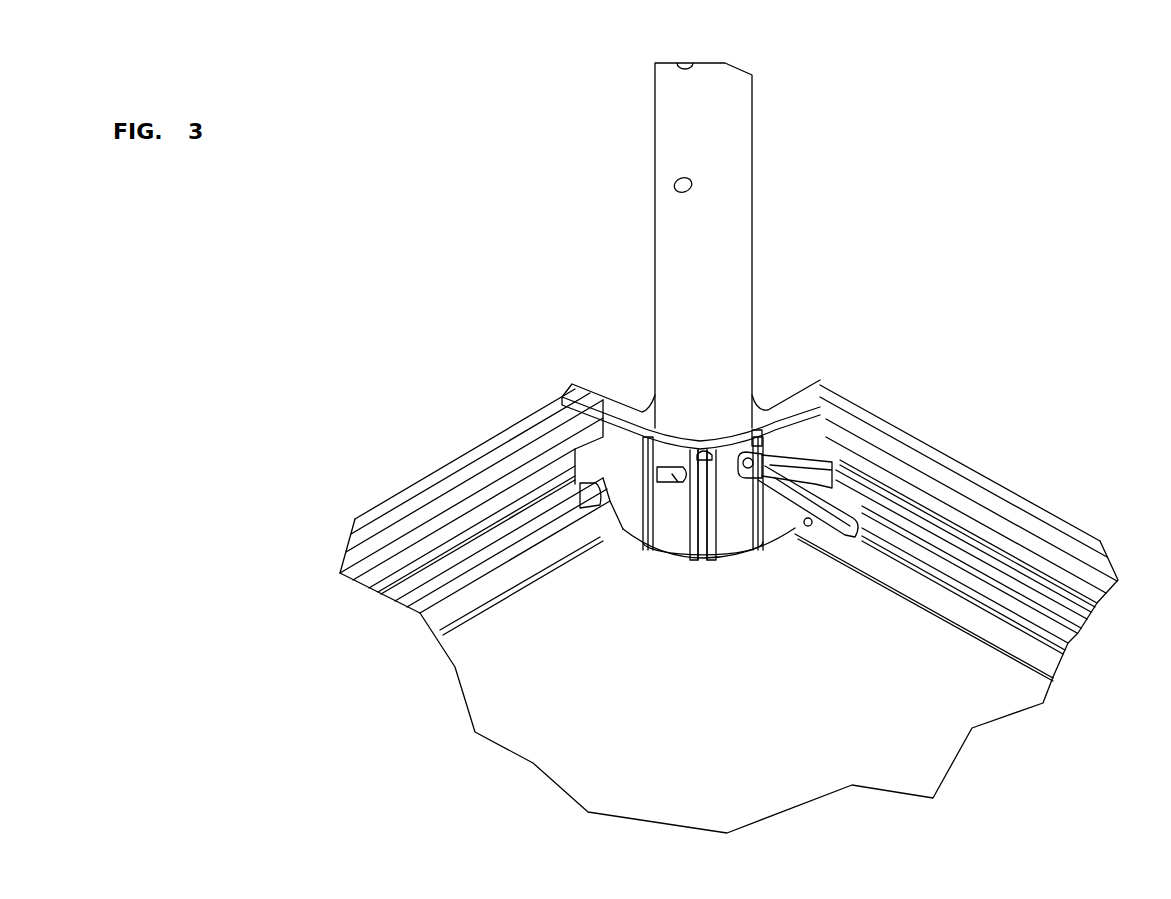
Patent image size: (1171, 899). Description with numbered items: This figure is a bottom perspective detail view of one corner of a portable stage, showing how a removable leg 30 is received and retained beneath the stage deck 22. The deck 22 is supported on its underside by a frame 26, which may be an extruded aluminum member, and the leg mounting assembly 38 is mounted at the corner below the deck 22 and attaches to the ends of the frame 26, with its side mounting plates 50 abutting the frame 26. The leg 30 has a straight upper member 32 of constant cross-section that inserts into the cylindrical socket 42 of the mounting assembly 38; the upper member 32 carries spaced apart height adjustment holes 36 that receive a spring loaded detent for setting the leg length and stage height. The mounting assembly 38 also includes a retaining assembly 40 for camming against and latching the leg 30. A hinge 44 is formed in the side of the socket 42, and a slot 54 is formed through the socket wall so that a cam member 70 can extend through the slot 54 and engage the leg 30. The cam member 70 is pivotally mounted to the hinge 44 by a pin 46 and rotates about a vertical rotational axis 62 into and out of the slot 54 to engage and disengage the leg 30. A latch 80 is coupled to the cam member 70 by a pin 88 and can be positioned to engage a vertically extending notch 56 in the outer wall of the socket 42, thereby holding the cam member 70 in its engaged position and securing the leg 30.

The stage deck 22 is at (720, 722).
The frame 26 is at (475, 462).
The leg 30 is at (673, 245).
The upper member 32 is at (733, 222).
The height adjustment hole 36 is at (690, 183).
The leg mounting assembly 38 is at (773, 441).
The retaining assembly 40 is at (861, 468).
The socket 42 is at (757, 393).
The hinge 44 is at (718, 545).
The pin 46 is at (710, 470).
The side mounting plate 50 is at (600, 398).
The slot 54 is at (673, 481).
The notch 56 is at (762, 440).
The vertical rotational axis 62 is at (703, 438).
The cam member 70 is at (853, 522).
The latch 80 is at (817, 478).
The pin 88 is at (757, 470).